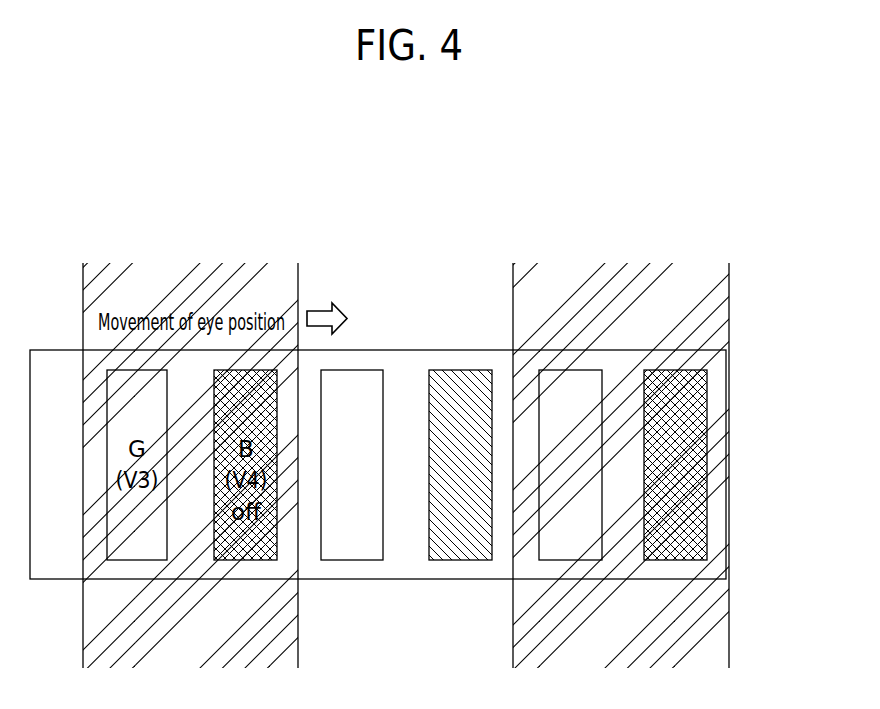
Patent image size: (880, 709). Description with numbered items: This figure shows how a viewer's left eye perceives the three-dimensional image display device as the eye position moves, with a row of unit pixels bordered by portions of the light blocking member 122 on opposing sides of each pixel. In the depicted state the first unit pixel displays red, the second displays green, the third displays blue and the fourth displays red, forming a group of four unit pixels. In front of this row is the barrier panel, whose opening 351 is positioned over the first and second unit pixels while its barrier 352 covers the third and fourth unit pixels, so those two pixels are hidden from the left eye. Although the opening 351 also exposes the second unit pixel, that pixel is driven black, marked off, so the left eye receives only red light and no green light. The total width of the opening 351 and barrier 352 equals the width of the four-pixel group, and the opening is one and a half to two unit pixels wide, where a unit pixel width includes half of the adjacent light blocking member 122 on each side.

The light blocking member 122 is at (403, 571).
The opening 351 is at (451, 306).
The barrier 352 is at (620, 287).